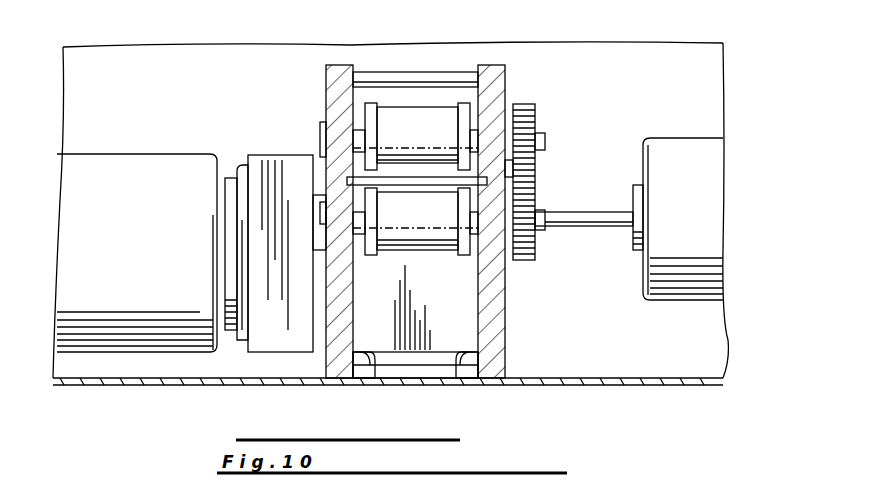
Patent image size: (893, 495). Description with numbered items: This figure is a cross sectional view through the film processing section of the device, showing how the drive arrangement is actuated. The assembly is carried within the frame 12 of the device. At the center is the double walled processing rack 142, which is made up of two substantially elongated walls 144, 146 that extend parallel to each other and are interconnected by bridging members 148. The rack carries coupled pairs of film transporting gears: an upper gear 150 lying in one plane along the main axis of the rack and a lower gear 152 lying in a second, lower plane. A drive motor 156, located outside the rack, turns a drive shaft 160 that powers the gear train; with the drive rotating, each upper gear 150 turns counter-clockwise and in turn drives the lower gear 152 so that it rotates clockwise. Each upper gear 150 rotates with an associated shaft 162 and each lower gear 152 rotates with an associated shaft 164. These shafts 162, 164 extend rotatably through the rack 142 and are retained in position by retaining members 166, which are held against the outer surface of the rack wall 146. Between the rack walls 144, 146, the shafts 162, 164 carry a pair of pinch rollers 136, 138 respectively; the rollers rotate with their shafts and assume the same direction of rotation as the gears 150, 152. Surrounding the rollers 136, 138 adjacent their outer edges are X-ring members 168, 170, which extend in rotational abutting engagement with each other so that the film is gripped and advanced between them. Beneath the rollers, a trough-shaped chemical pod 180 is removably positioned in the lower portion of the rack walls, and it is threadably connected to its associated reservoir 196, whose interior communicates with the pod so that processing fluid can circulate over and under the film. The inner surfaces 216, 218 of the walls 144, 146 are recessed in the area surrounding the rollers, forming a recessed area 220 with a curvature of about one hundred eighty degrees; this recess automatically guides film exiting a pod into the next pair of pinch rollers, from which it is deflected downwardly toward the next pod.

The frame 12 is at (130, 386).
The pinch roller 136 is at (415, 136).
The pinch roller 138 is at (418, 226).
The double walled processing rack 142 is at (322, 74).
The rack wall 144 is at (337, 65).
The rack wall 146 is at (496, 65).
The bridging member 148 is at (412, 72).
The upper film transporting gear 150 is at (537, 112).
The lower film transporting gear 152 is at (537, 186).
The drive motor 156 is at (700, 214).
The drive shaft 160 is at (560, 230).
The shaft 162 is at (320, 125).
The shaft 164 is at (326, 252).
The retaining member 166 is at (320, 222).
The X-ring member 168 is at (478, 106).
The X-ring member 170 is at (478, 268).
The chemical pod 180 is at (268, 156).
The reservoir 196 is at (98, 258).
The inner surface 216 is at (362, 378).
The inner surface 218 is at (485, 378).
The recessed area 220 is at (347, 180).